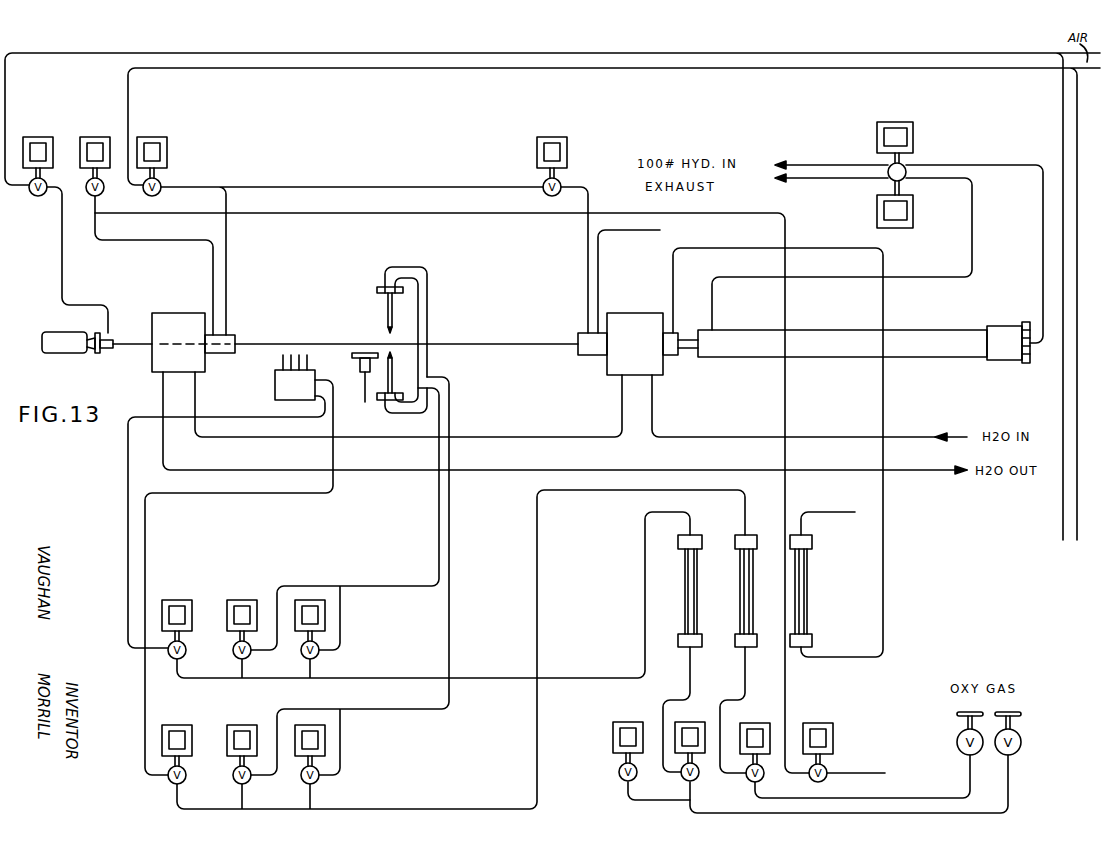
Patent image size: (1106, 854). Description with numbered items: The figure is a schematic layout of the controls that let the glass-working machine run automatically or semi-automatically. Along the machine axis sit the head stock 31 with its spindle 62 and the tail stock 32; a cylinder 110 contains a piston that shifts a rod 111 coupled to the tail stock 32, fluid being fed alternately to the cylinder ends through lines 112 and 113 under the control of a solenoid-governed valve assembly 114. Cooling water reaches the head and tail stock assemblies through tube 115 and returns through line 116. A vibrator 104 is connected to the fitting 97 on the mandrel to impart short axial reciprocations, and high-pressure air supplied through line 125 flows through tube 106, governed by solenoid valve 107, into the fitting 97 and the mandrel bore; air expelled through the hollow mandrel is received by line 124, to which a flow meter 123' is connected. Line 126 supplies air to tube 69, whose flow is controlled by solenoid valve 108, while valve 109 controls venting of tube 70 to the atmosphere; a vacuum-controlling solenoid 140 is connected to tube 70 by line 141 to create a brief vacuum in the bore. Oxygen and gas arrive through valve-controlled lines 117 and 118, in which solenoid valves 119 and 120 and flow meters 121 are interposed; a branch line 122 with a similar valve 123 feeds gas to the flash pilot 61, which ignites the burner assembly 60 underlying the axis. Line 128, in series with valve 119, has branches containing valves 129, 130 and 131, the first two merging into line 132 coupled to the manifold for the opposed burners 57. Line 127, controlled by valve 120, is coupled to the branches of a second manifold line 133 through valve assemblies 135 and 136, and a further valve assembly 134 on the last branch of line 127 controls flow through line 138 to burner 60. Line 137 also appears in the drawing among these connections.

The head stock 31 is at (150, 367).
The tail stock 32 is at (640, 306).
The burners 57 is at (393, 368).
The burner assembly 60 is at (282, 396).
The flash pilot 61 is at (363, 352).
The spindle 62 is at (222, 355).
The tube 69 is at (411, 187).
The tube 70 is at (213, 294).
The fitting 97 is at (111, 340).
The vibrator 104 is at (55, 348).
The tube 106 is at (62, 279).
The solenoid-actuated valve 107 is at (38, 148).
The solenoid-actuated valve 108 is at (153, 147).
The vent solenoid valve 109 is at (95, 147).
The cylinder 110 is at (924, 328).
The rod 111 is at (687, 338).
The line 112 is at (810, 278).
The line 113 is at (1042, 240).
The valve assembly 114 is at (907, 173).
The tube 115 is at (905, 437).
The line 116 is at (898, 472).
The valve-controlled line 117 is at (968, 773).
The valve-controlled line 118 is at (1013, 773).
The valve 119 is at (760, 778).
The valve 120 is at (698, 780).
The flow meters 121 is at (741, 606).
The branch line 122 is at (672, 805).
The valve 123 is at (603, 751).
The flow meter 123' is at (824, 579).
The line 124 is at (888, 565).
The line 125 is at (479, 53).
The line 126 is at (471, 69).
The line 127 is at (420, 670).
The line 128 is at (437, 808).
The solenoid-controlled valve 129 is at (318, 782).
The solenoid-controlled valve 130 is at (250, 781).
The solenoid-controlled valve 131 is at (185, 782).
The line 132 is at (452, 616).
The line 133 is at (438, 507).
The valve assembly 134 is at (188, 657).
The valve assembly 135 is at (250, 654).
The valve assembly 136 is at (318, 654).
The line 137 is at (148, 553).
The line 138 is at (127, 557).
The vacuum-controlling solenoid 140 is at (829, 768).
The line 141 is at (788, 382).